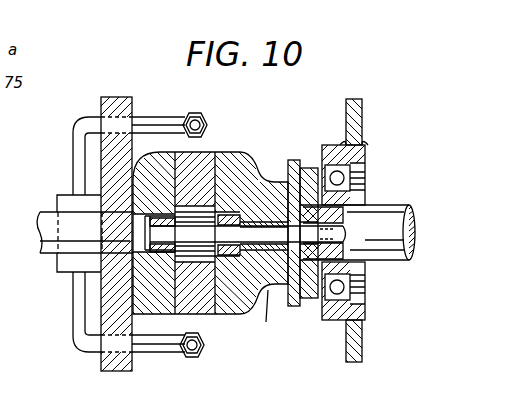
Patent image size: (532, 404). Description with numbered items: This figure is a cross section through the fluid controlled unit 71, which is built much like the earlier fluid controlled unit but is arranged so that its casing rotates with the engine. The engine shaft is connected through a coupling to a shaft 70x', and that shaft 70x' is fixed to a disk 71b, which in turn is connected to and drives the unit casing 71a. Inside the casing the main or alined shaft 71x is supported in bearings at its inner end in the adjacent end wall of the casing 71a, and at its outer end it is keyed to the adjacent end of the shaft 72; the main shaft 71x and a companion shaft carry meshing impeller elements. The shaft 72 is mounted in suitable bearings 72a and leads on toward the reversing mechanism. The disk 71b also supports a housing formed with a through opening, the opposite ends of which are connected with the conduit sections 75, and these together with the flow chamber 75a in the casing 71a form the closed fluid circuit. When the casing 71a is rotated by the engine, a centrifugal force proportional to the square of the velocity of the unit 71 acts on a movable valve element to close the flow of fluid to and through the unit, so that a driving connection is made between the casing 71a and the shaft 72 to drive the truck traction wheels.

The shaft 70x' is at (69, 251).
The fluid controlled unit 71 is at (250, 146).
The unit casing 71a is at (290, 174).
The disk 71b is at (118, 97).
The main or alined shaft 71x is at (280, 318).
The shaft 72 is at (381, 216).
The bearings 72a is at (337, 294).
The conduit sections 75 is at (84, 159).
The flow chamber 75a is at (203, 316).